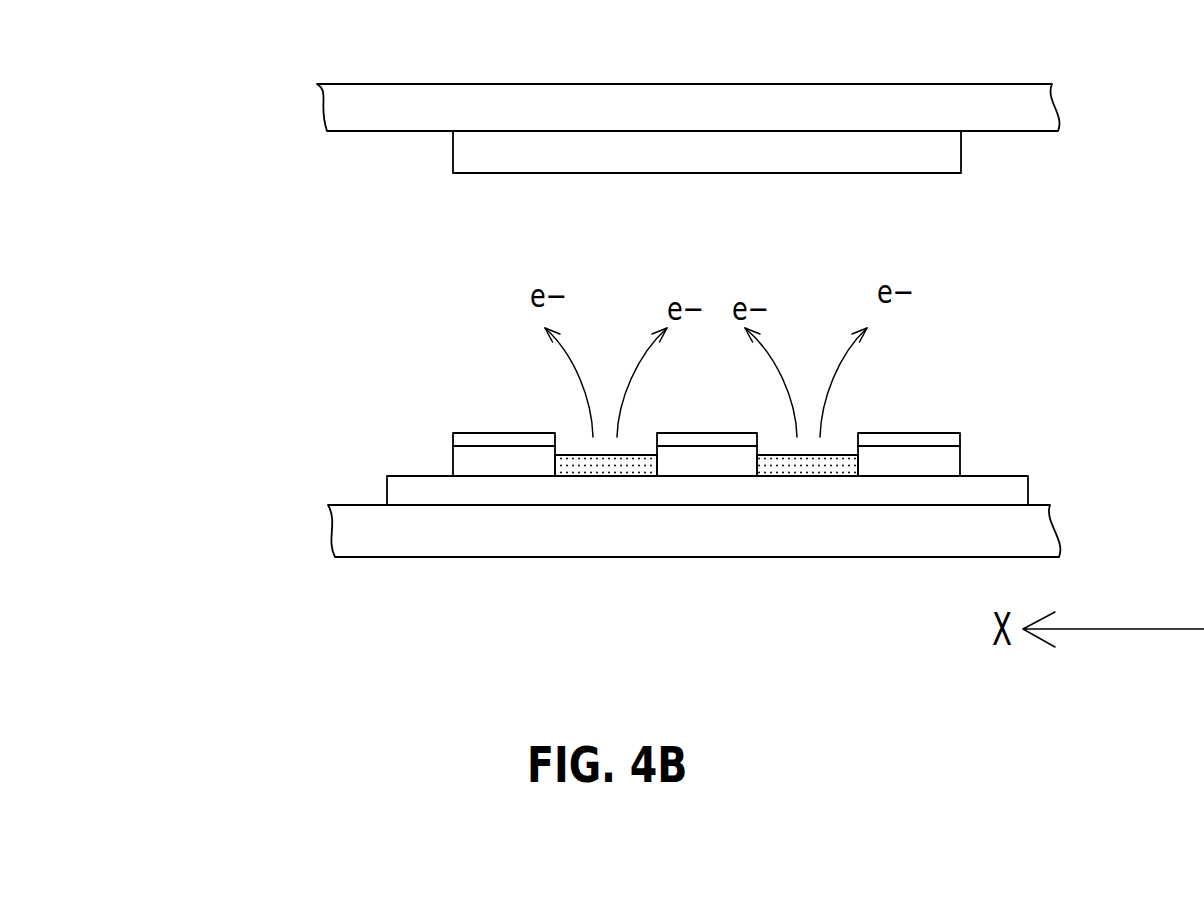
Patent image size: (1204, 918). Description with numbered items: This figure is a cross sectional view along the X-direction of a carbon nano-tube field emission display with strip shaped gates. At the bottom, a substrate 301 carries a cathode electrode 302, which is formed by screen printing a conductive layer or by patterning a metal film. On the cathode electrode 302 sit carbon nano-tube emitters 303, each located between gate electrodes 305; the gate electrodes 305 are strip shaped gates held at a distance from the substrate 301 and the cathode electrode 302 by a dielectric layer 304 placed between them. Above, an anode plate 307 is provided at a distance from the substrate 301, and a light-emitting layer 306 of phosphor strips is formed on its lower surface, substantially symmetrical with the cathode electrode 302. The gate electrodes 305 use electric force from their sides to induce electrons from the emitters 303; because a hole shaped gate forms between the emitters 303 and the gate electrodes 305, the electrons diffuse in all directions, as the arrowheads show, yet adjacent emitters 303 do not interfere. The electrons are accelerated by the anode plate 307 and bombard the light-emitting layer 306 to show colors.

The substrate 301 is at (358, 522).
The cathode electrode 302 is at (407, 488).
The carbon nano-tube emitter 303 is at (593, 468).
The dielectric layer 304 is at (450, 458).
The gate electrode 305 is at (481, 432).
The light-emitting layer 306 is at (485, 157).
The anode plate 307 is at (333, 102).